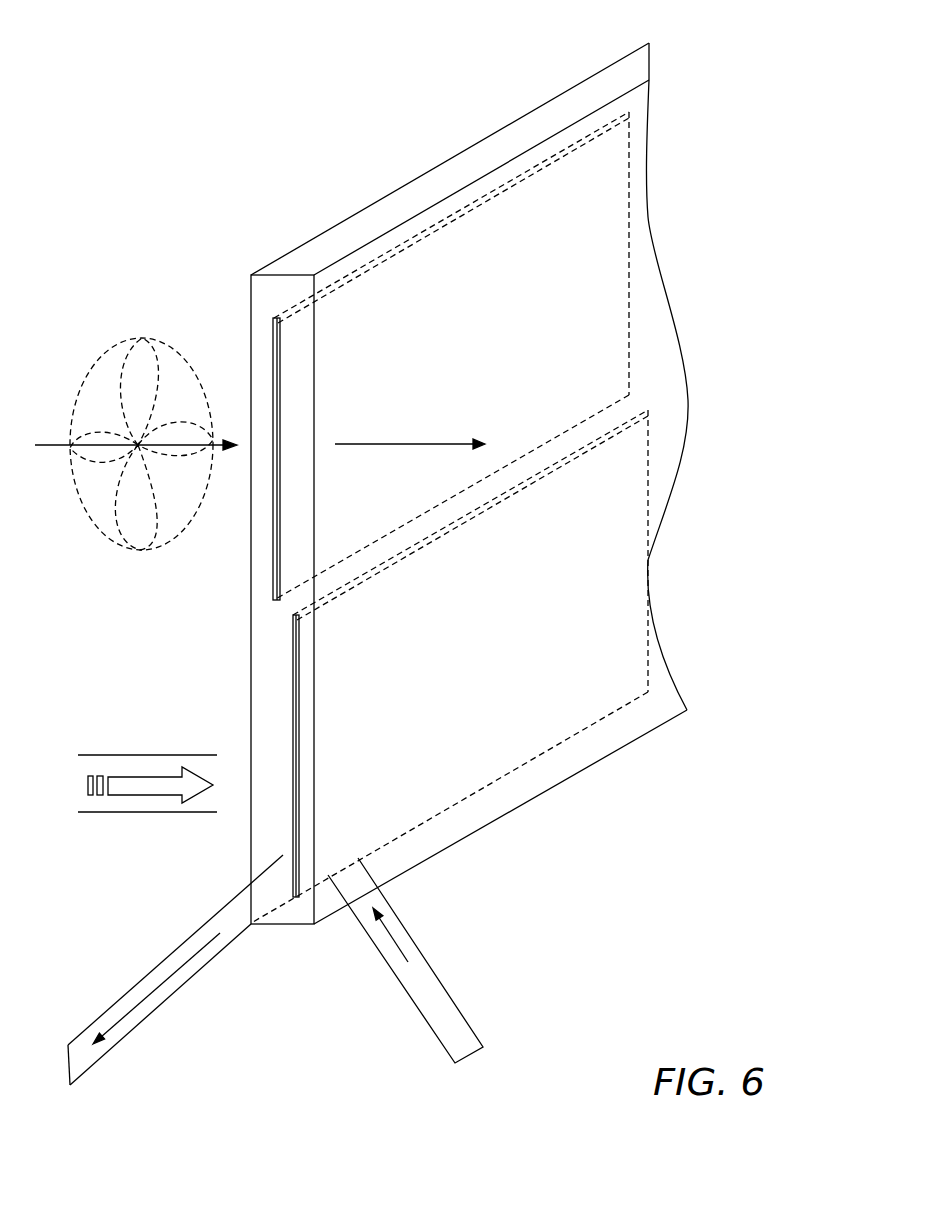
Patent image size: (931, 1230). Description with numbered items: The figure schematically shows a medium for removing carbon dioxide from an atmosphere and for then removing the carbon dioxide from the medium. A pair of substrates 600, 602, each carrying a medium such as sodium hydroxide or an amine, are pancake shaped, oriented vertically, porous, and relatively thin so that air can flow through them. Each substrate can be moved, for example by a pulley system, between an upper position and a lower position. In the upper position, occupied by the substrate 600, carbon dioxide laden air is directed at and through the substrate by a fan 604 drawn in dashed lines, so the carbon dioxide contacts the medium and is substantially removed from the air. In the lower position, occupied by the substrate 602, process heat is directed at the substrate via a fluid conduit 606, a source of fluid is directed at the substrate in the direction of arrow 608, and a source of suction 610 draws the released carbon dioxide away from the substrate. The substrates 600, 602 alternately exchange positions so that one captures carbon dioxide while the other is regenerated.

The substrate 600 is at (560, 287).
The substrate 602 is at (560, 605).
The fan 604 is at (151, 333).
The fluid conduit 606 is at (437, 980).
The arrow 608 is at (137, 755).
The source of suction 610 is at (150, 1015).